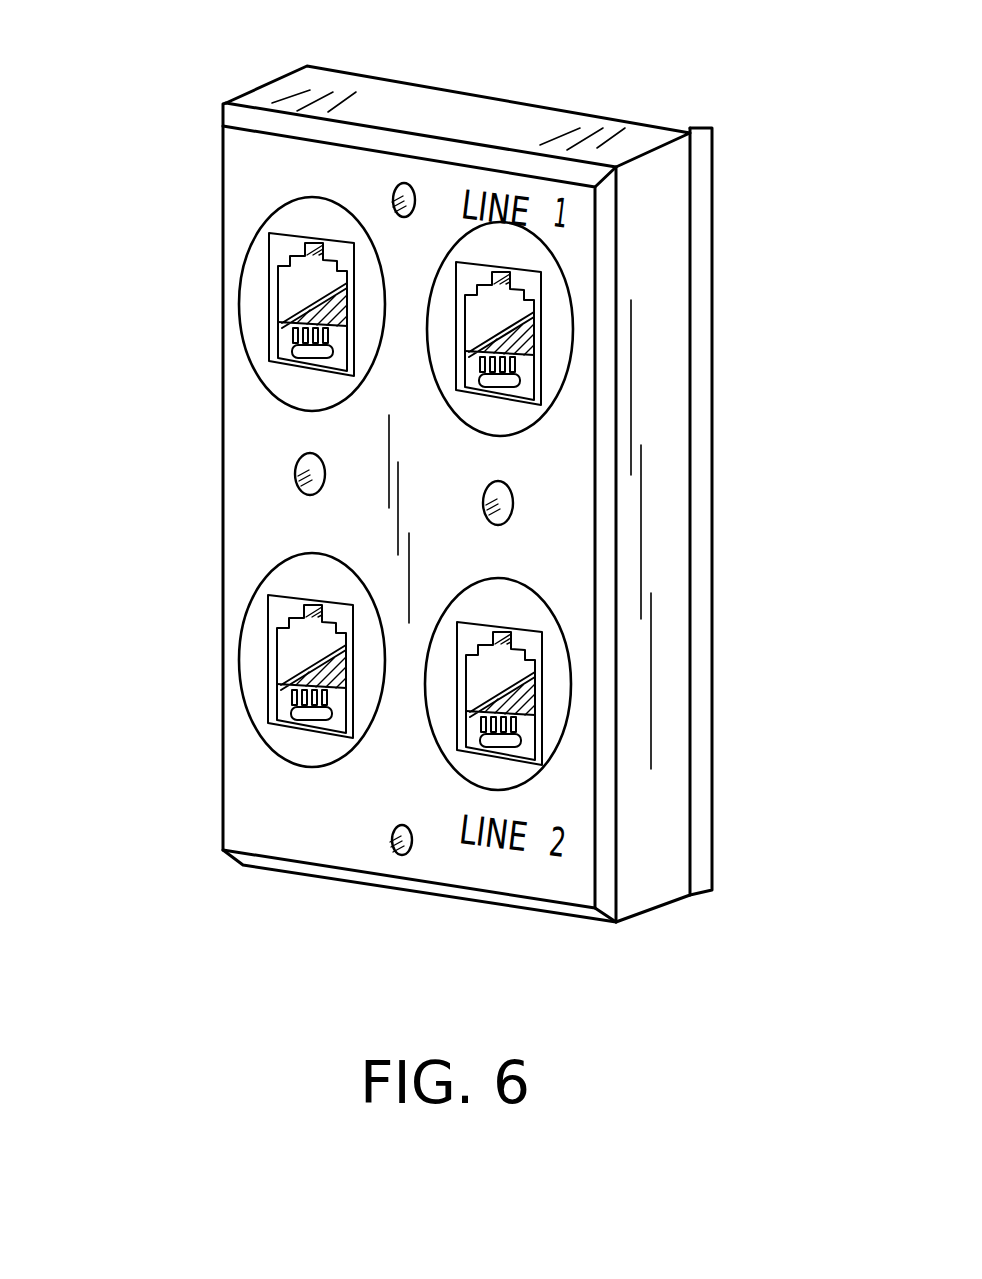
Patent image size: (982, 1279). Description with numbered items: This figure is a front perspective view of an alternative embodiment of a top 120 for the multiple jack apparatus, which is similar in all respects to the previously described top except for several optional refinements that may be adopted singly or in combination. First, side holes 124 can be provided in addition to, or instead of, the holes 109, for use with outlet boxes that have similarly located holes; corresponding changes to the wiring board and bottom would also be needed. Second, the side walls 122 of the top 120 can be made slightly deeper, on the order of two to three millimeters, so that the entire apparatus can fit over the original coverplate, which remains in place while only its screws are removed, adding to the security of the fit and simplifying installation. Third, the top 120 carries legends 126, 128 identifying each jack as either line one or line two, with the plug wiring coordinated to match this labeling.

The top 120 is at (518, 122).
The side walls 122 is at (704, 331).
The side holes 124 is at (300, 490).
The legend 126 is at (260, 167).
The legend 128 is at (258, 795).
The holes 109 is at (402, 857).